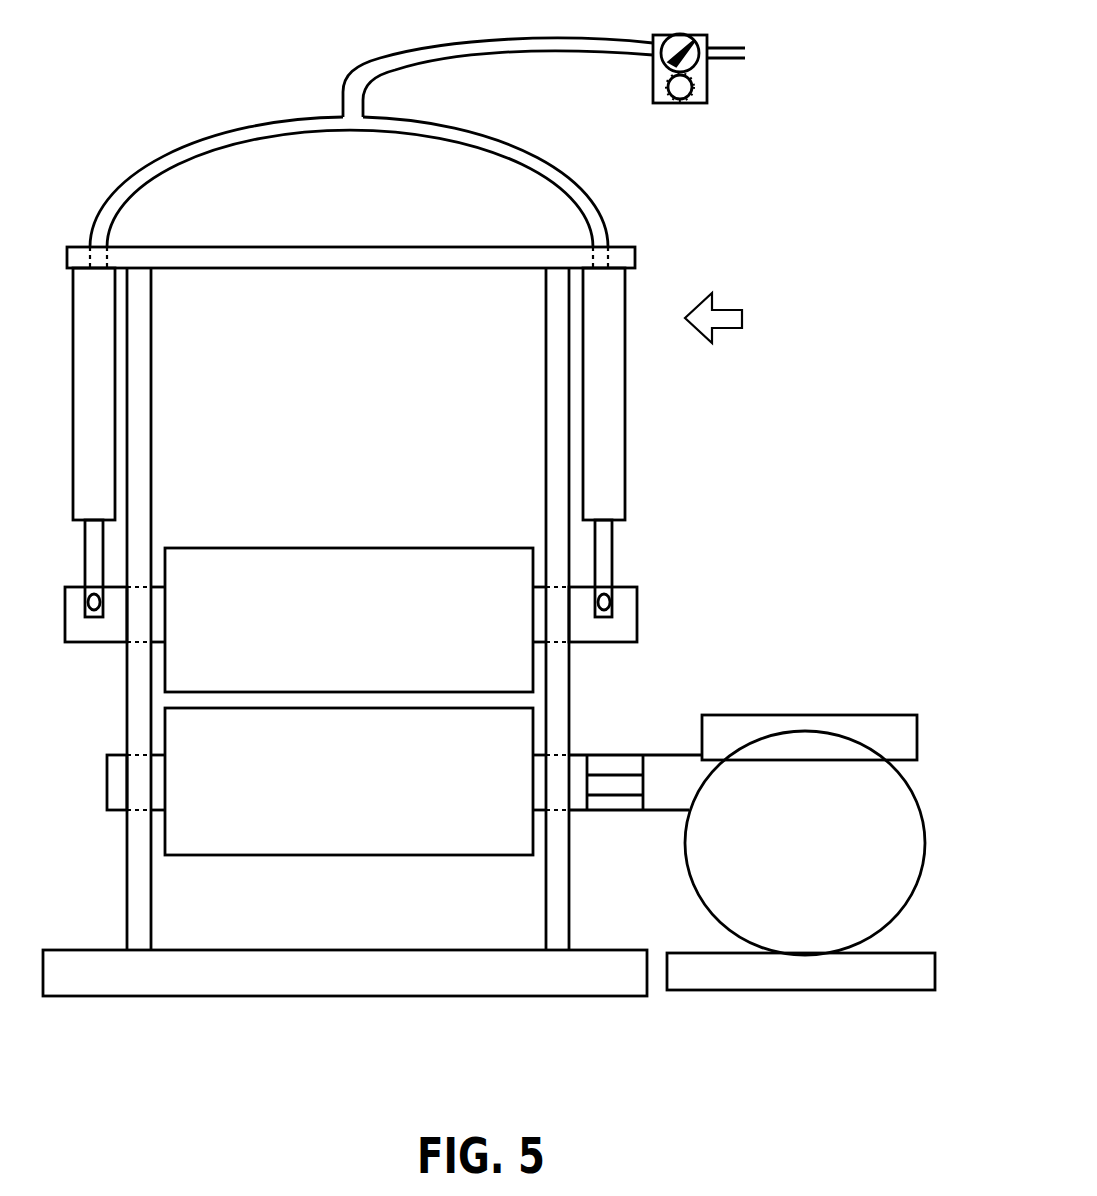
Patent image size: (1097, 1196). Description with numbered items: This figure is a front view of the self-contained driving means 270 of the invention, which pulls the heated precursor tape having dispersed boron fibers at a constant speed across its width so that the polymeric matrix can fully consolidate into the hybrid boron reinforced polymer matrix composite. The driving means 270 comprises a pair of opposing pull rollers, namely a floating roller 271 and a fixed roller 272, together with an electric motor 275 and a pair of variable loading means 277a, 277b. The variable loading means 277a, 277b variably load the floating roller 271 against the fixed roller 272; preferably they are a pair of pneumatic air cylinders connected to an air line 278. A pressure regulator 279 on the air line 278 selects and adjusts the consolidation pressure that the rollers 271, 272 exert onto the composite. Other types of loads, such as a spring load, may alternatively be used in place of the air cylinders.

The driving means 270 is at (738, 318).
The floating roller 271 is at (349, 597).
The fixed roller 272 is at (369, 879).
The electric motor 275 is at (752, 827).
The variable loading means 277a is at (229, 455).
The variable loading means 277b is at (518, 455).
The air line 278 is at (393, 167).
The pressure regulator 279 is at (712, 95).